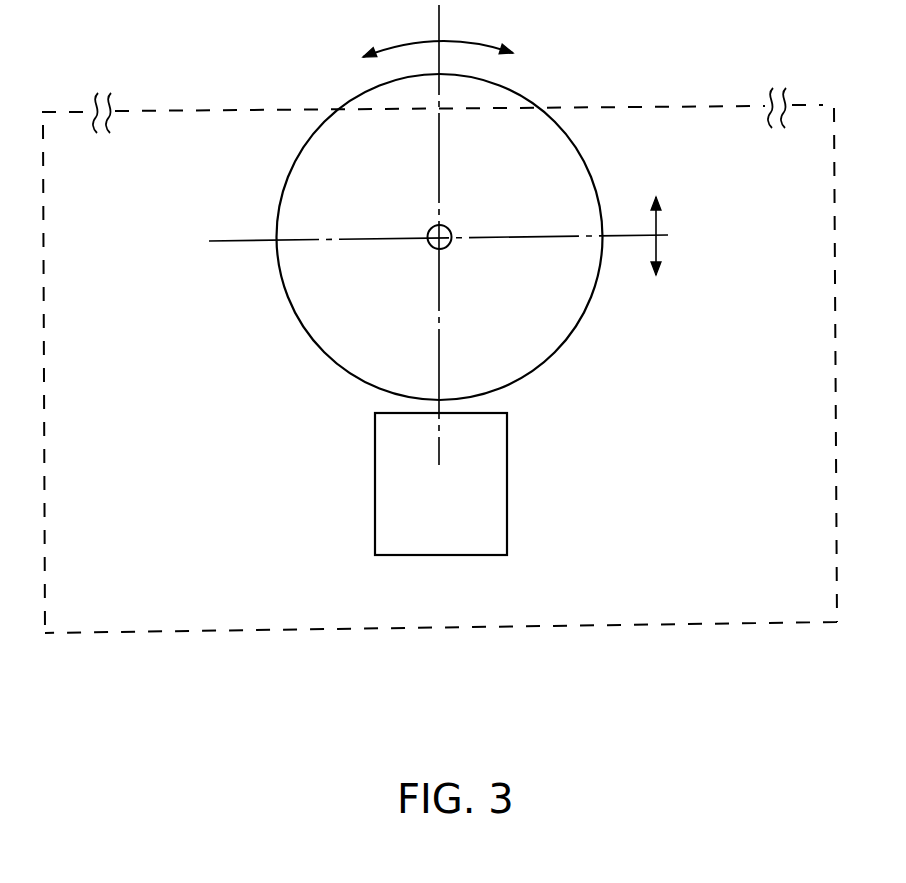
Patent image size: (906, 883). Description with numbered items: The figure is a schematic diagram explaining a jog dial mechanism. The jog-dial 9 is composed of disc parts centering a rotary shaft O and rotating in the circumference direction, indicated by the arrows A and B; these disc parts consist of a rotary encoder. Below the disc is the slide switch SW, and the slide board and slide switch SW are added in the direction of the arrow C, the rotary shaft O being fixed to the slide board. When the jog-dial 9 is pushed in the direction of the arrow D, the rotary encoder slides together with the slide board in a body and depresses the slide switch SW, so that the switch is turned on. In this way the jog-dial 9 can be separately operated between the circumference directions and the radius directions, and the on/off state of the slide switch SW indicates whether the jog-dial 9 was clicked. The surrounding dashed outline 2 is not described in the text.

The housing / panel 2 is at (166, 112).
The jog-dial 9 is at (566, 70).
The rotary shaft O is at (445, 222).
The slide switch SW is at (507, 485).
The arrow A is at (449, 35).
The arrow B is at (338, 32).
The arrow C is at (670, 219).
The arrow D is at (684, 294).